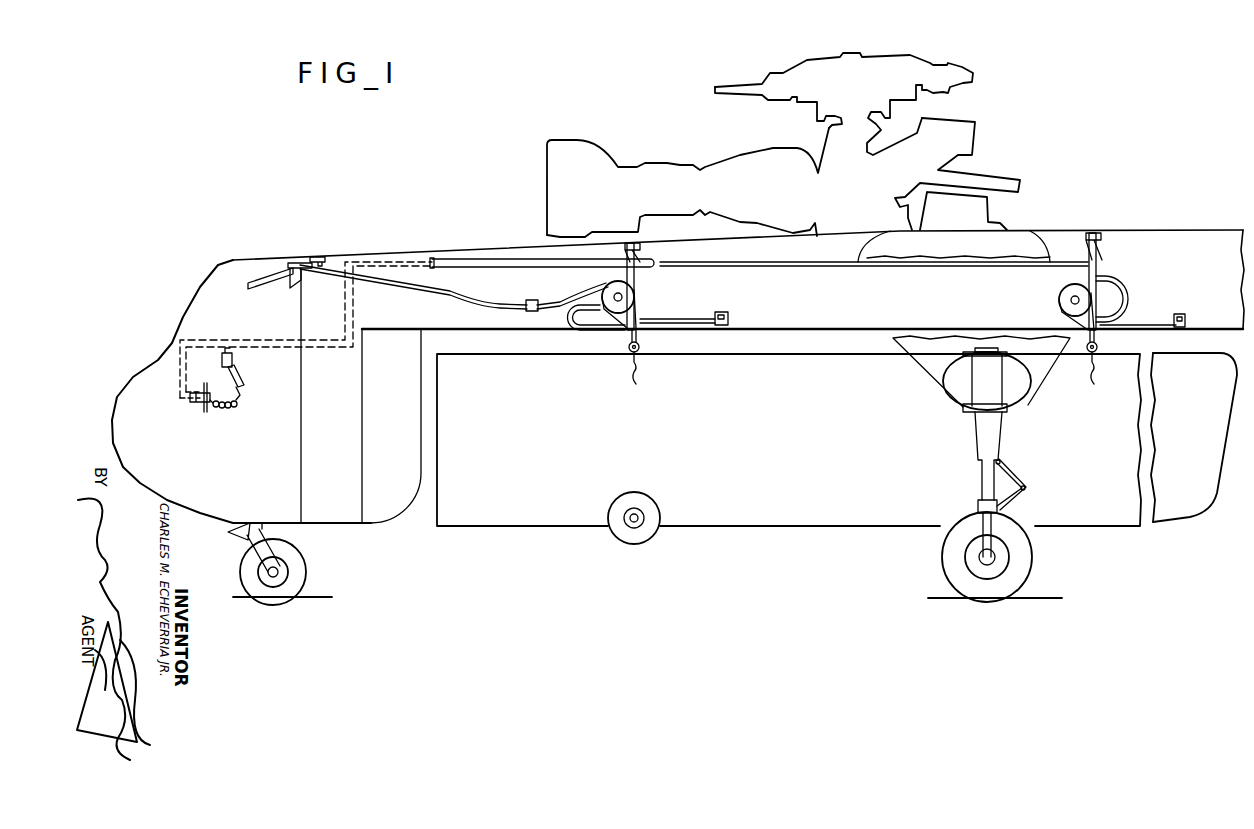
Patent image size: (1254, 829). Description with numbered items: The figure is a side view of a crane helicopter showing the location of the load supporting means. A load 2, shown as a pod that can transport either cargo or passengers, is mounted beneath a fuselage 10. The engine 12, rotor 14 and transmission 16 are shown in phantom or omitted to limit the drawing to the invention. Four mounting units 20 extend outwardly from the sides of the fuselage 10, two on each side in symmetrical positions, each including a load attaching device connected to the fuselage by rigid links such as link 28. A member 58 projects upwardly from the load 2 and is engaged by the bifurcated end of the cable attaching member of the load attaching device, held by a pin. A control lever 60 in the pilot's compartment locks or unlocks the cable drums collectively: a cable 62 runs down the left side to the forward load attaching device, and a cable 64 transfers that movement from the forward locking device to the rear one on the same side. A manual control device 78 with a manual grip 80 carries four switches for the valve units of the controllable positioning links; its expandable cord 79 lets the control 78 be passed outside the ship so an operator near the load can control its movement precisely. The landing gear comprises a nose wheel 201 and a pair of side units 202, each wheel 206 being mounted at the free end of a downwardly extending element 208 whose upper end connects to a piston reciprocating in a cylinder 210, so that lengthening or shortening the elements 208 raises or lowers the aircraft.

The load 2 is at (745, 454).
The fuselage 10 is at (782, 295).
The engine 12 is at (670, 172).
The rotor 14 is at (800, 75).
The transmission 16 is at (866, 205).
The mounting unit 20 is at (644, 304).
The rigid link 28 is at (677, 325).
The member projecting upwardly from the load 58 is at (636, 368).
The control lever 60 is at (260, 280).
The cable 62 is at (408, 284).
The cable 64 is at (812, 331).
The manual control device 78 is at (240, 362).
The expandable cord 79 is at (216, 410).
The manual grip 80 is at (246, 378).
The nose wheel 201 is at (306, 574).
The side unit 202 is at (976, 435).
The wheel 206 is at (947, 561).
The downwardly extending element 208 is at (996, 444).
The cylinder 210 is at (978, 388).